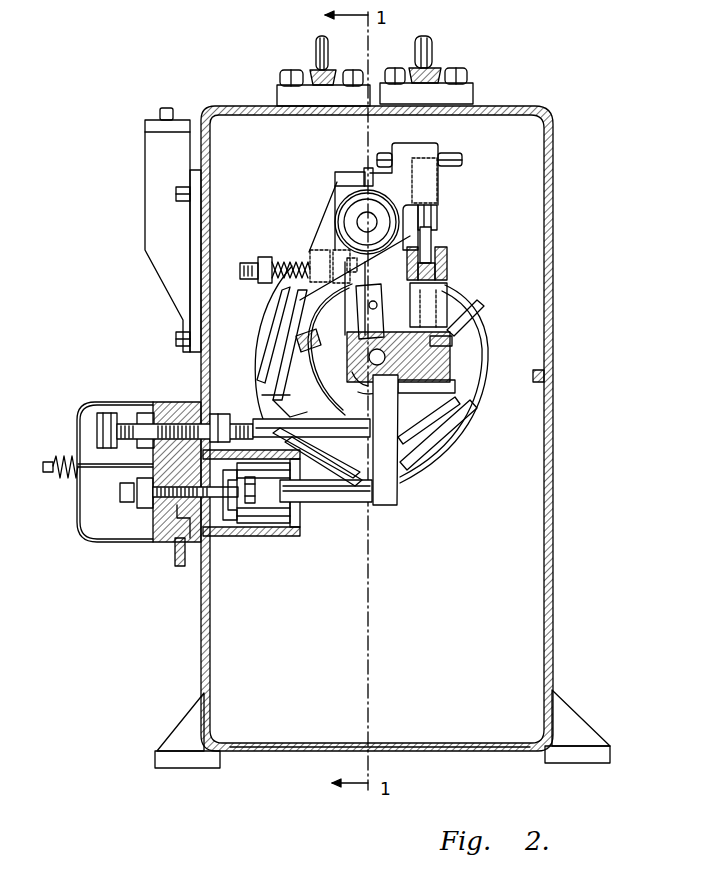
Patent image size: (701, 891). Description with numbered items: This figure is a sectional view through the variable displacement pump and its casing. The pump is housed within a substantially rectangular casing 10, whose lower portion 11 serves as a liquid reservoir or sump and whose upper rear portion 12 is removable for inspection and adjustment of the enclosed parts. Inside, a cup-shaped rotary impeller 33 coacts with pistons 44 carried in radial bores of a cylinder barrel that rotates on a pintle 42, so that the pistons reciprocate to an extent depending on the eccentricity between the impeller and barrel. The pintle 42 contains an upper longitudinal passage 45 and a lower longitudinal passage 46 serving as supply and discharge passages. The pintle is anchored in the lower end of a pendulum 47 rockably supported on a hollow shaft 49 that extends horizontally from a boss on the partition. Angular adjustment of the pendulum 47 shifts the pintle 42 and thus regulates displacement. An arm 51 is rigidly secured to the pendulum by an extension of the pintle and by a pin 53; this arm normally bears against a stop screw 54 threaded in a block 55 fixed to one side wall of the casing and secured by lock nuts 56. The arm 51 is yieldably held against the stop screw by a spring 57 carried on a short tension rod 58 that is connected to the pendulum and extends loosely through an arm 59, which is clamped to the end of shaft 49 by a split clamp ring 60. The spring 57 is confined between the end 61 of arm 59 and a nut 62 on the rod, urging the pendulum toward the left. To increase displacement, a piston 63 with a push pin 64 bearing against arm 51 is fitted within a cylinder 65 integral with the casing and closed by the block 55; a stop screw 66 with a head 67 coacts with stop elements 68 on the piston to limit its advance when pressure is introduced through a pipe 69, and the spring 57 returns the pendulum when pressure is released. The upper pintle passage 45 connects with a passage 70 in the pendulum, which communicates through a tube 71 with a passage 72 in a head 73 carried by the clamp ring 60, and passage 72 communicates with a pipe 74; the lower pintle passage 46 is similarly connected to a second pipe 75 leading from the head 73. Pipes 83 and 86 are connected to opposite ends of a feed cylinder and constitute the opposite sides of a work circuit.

The casing 10 is at (553, 456).
The lower portion 11 is at (283, 722).
The upper rear portion 12 is at (555, 214).
The rotary impeller 33 is at (272, 318).
The pintle 42 is at (355, 362).
The piston 44 is at (312, 335).
The upper longitudinal passage 45 is at (355, 378).
The lower longitudinal passage 46 is at (368, 396).
The pendulum 47 is at (445, 303).
The hollow shaft 49 is at (360, 208).
The arm 51 is at (397, 505).
The pin 53 is at (377, 304).
The stop screw 54 is at (262, 395).
The block 55 is at (182, 405).
The lock nuts 56 is at (143, 420).
The spring 57 is at (286, 262).
The tension rod 58 is at (247, 262).
The arm 59 is at (343, 240).
The split clamp ring 60 is at (345, 172).
The end 61 is at (312, 252).
The nut 62 is at (262, 283).
The piston 63 is at (282, 527).
The push pin 64 is at (348, 502).
The cylinder 65 is at (230, 536).
The stop screw 66 is at (183, 492).
The head 67 is at (268, 525).
The stop elements 68 is at (208, 520).
The pipe 69 is at (178, 560).
The passage 70 is at (440, 346).
The tube 71 is at (428, 237).
The passage 72 is at (425, 167).
The head 73 is at (405, 165).
The pipe 74 is at (452, 152).
The pipe 75 is at (383, 152).
The pipe 83 is at (433, 44).
The pipe 86 is at (316, 46).